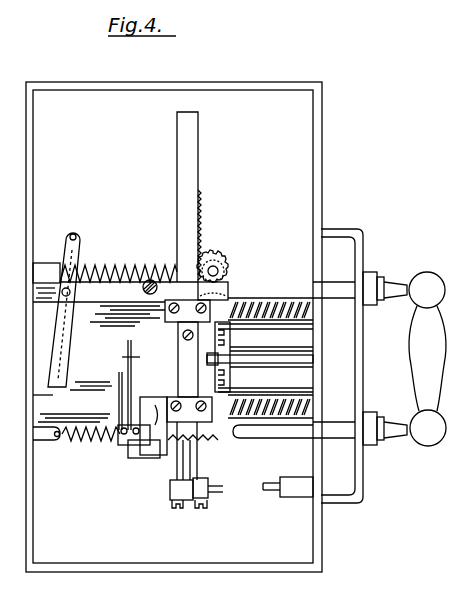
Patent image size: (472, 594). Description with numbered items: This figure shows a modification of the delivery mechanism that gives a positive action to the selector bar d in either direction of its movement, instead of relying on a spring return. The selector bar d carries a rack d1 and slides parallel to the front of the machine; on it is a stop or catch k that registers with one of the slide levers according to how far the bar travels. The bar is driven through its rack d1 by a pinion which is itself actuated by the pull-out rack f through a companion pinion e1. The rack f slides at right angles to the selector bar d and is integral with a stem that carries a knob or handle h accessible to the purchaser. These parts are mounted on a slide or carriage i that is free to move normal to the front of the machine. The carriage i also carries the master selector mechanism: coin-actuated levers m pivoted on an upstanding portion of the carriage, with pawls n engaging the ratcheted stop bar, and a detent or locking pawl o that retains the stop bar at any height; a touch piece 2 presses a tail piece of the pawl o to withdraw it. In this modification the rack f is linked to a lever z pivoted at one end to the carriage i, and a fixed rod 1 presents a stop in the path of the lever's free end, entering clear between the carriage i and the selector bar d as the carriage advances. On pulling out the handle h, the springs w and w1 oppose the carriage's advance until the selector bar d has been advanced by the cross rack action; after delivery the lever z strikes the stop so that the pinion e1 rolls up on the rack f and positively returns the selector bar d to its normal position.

The selector bar d is at (187, 197).
The rack d1 is at (200, 200).
The companion pinion e1 is at (231, 264).
The rack f is at (149, 295).
The spring w is at (250, 305).
The spring w1 is at (100, 263).
The lever z is at (60, 352).
The slide or carriage i is at (99, 355).
The coin-actuated lever m is at (162, 368).
The stop or catch k is at (176, 377).
The fixed rod 1 is at (258, 362).
The knob or handle h is at (404, 359).
The pawl n is at (170, 468).
The detent or locking pawl o is at (223, 489).
The touch piece 2 is at (296, 490).